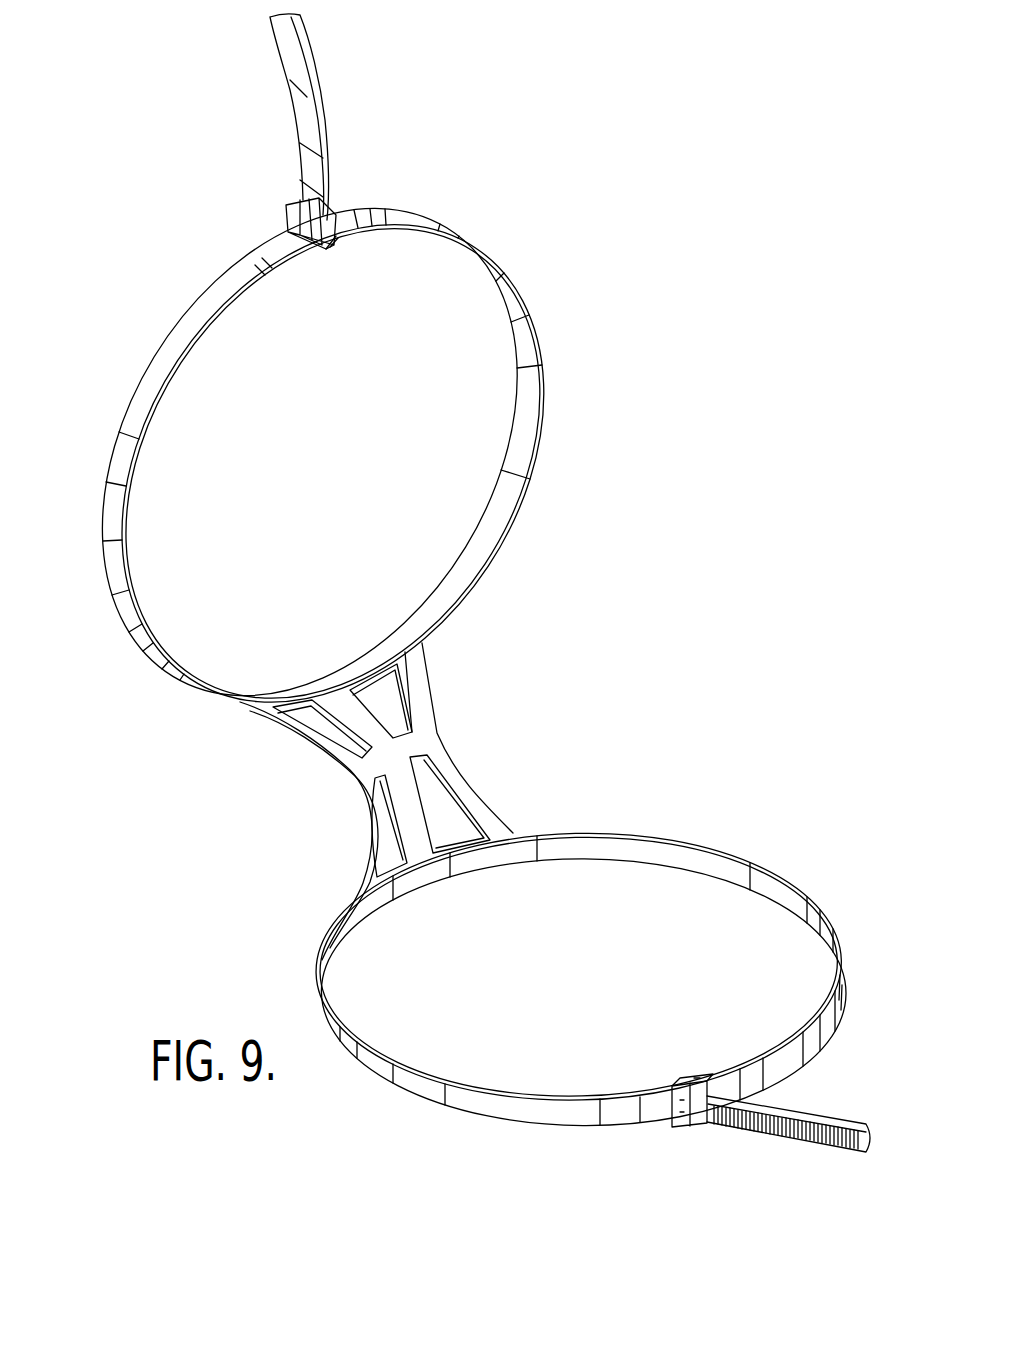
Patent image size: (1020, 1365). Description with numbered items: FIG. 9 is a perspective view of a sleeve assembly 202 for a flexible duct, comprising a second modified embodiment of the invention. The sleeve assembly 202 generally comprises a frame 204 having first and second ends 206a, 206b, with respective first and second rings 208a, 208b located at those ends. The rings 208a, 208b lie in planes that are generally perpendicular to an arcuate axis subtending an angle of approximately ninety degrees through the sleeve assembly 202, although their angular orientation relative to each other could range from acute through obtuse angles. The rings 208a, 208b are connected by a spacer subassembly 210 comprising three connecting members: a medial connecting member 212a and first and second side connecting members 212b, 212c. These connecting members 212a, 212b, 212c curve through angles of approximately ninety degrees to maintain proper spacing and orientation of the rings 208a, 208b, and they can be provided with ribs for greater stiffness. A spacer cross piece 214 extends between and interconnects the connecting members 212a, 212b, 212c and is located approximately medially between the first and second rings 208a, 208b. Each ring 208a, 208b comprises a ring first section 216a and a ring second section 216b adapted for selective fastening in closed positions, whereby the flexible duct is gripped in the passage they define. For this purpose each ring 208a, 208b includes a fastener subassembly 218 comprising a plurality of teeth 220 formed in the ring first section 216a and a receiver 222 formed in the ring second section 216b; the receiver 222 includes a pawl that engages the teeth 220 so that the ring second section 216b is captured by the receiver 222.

The sleeve assembly 202 is at (600, 310).
The frame 204 is at (160, 332).
The first end 206a is at (111, 457).
The second end 206b is at (597, 1126).
The first ring 208a is at (535, 490).
The second ring 208b is at (727, 852).
The spacer subassembly 210 is at (417, 670).
The medial connecting member 212a is at (427, 800).
The first side connecting member 212b is at (337, 760).
The second side connecting member 212c is at (433, 720).
The spacer cross piece 214 is at (367, 838).
The ring first section 216a is at (272, 273).
The ring second section 216b is at (387, 210).
The fastener subassembly 218 is at (287, 205).
The teeth 220 is at (805, 1148).
The receiver 222 is at (337, 230).